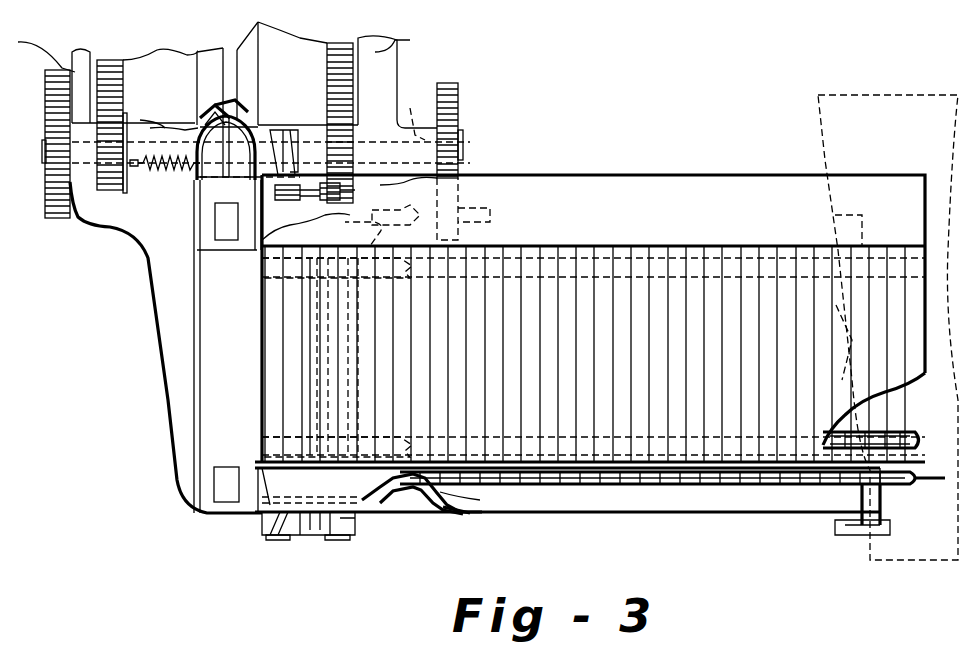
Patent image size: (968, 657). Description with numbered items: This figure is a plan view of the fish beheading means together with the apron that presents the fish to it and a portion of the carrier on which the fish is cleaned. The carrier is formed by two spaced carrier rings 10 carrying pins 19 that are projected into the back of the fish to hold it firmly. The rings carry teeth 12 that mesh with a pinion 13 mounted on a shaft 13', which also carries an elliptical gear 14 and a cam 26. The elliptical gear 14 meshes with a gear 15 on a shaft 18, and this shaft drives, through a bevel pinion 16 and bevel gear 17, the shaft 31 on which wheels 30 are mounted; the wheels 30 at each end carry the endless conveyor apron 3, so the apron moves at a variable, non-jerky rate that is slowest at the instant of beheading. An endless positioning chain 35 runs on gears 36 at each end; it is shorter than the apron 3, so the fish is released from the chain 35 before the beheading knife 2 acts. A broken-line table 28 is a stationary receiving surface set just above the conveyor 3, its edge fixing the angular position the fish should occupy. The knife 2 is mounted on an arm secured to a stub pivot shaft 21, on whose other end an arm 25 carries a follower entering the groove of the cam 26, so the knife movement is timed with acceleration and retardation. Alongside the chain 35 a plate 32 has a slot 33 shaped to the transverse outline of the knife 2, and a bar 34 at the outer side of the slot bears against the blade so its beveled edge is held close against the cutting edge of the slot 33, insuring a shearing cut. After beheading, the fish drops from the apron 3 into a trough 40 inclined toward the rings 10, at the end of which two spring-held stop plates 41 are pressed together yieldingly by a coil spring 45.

The be-heading knife 2 is at (385, 498).
The conveyor apron 3 is at (590, 318).
The carrier rings 10 is at (222, 75).
The teeth 12 is at (315, 92).
The pinion 13 is at (256, 163).
The shaft 13' is at (285, 112).
The elliptical gear 14 is at (458, 110).
The gear 15 is at (460, 205).
The bevel pinion 16 is at (412, 212).
The bevel gear 17 is at (300, 215).
The shaft 18 is at (492, 215).
The pins 19 is at (225, 105).
The stub pivot shaft 21 is at (335, 546).
The arm 25 is at (255, 240).
The cam 26 is at (288, 130).
The table 28 is at (825, 152).
The wheels 30 is at (278, 430).
The shaft 31 is at (315, 357).
The bar or plate 32 is at (665, 507).
The slot 33 is at (476, 501).
The bar 34 is at (425, 505).
The positioning chain 35 is at (675, 484).
The gears 36 is at (900, 500).
The trough 40 is at (222, 378).
The stop plates 41 is at (140, 140).
The coil spring 45 is at (168, 180).